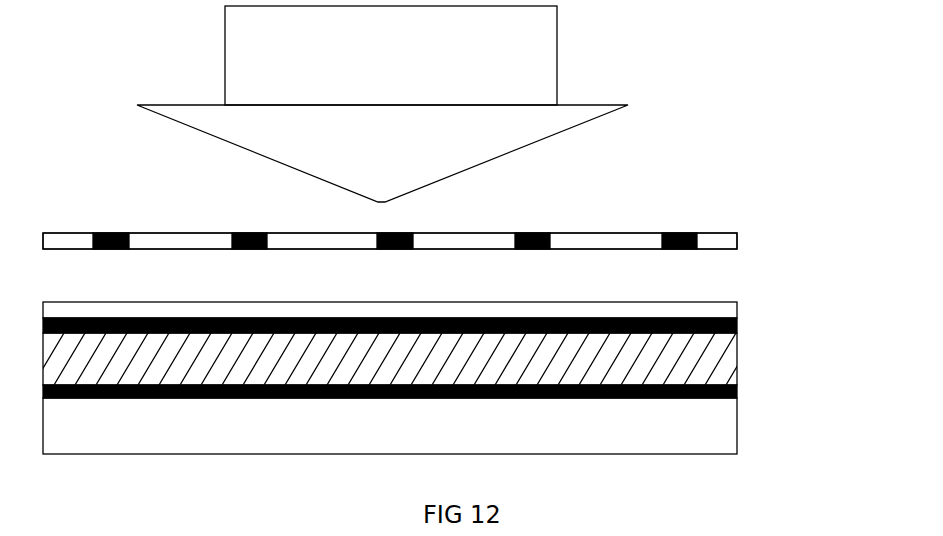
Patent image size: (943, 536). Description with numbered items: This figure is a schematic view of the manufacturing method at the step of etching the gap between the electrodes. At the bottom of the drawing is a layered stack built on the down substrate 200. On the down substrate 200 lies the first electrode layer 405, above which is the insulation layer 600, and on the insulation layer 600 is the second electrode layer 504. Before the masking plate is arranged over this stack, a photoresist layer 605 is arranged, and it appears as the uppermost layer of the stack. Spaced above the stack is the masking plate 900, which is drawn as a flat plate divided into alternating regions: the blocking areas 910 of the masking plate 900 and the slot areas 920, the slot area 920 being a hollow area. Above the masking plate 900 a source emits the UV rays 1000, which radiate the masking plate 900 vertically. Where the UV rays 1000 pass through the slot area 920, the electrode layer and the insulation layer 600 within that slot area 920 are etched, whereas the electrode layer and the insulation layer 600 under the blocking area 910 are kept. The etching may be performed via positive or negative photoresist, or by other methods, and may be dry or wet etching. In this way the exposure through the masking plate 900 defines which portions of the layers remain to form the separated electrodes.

The UV rays 1000 is at (531, 148).
The masking plate 900 is at (390, 201).
The blocking area of the masking plate 910 is at (192, 242).
The slot area 920 is at (463, 245).
The photoresist layer 605 is at (737, 304).
The second electrode layer 504 is at (737, 325).
The insulation layer 600 is at (737, 350).
The first electrode layer 405 is at (737, 400).
The down substrate 200 is at (705, 440).